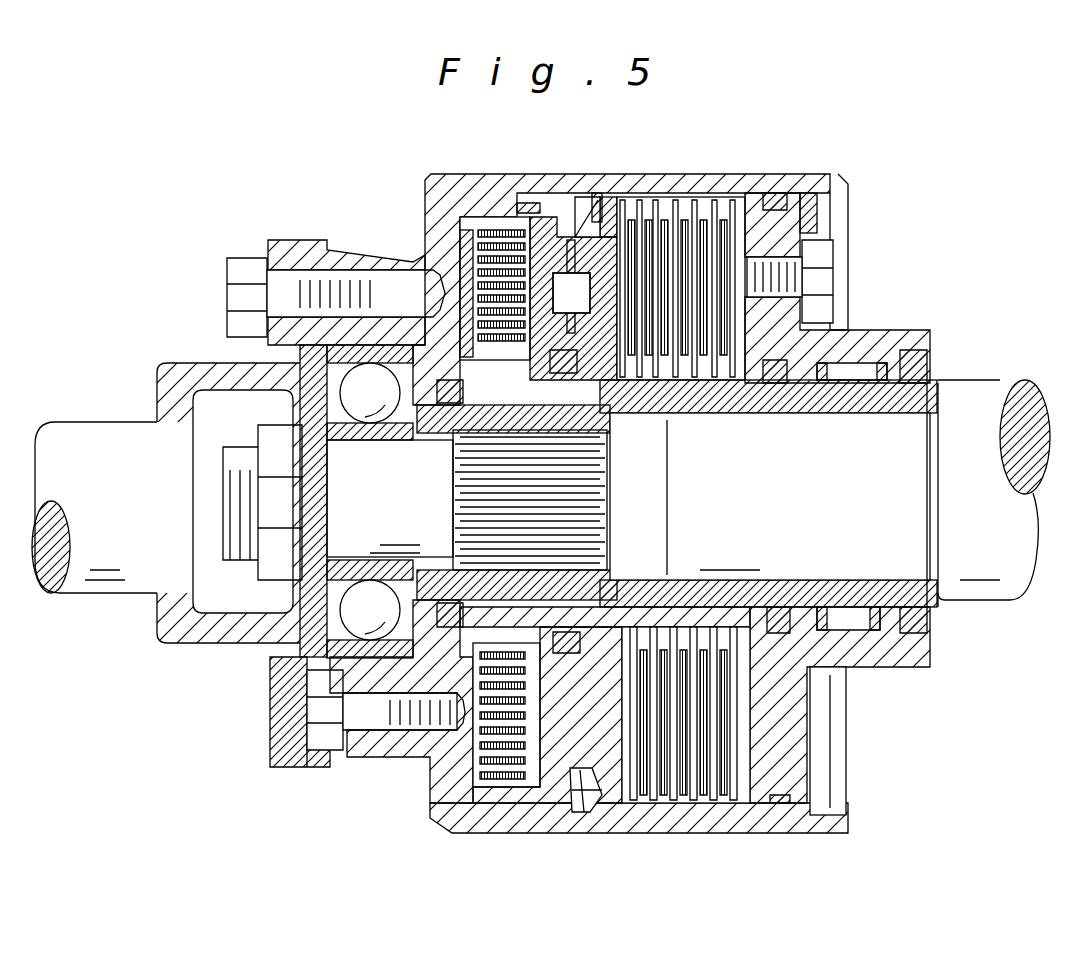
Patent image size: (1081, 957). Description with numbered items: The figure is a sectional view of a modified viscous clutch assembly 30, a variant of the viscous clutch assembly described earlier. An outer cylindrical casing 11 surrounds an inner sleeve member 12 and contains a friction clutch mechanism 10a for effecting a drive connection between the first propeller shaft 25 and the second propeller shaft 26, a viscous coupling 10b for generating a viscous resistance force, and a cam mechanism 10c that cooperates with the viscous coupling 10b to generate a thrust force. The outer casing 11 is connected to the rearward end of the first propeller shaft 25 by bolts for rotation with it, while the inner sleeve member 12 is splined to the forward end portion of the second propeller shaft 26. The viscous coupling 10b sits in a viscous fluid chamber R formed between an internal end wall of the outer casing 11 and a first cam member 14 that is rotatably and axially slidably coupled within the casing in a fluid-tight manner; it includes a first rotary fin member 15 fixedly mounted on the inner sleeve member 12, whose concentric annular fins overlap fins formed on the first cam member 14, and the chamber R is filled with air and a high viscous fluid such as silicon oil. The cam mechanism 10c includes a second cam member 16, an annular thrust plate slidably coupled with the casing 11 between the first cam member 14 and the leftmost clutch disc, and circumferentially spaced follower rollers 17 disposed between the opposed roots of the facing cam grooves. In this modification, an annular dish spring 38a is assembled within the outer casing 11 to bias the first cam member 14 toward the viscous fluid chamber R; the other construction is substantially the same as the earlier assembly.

The modified viscous clutch assembly 30 is at (876, 190).
The outer cylindrical casing 11 is at (776, 186).
The first cam member 14 is at (545, 232).
The annular dish spring 38a is at (576, 235).
The second cam member 16 is at (618, 218).
The follower rollers 17 is at (583, 302).
The viscous fluid chamber R is at (458, 258).
The first propeller shaft 25 is at (88, 436).
The second propeller shaft 26 is at (980, 392).
The inner sleeve member 12 is at (833, 590).
The first rotary fin member 15 is at (470, 735).
The friction clutch mechanism 10a is at (711, 795).
The viscous coupling 10b is at (463, 786).
The cam mechanism 10c is at (578, 800).